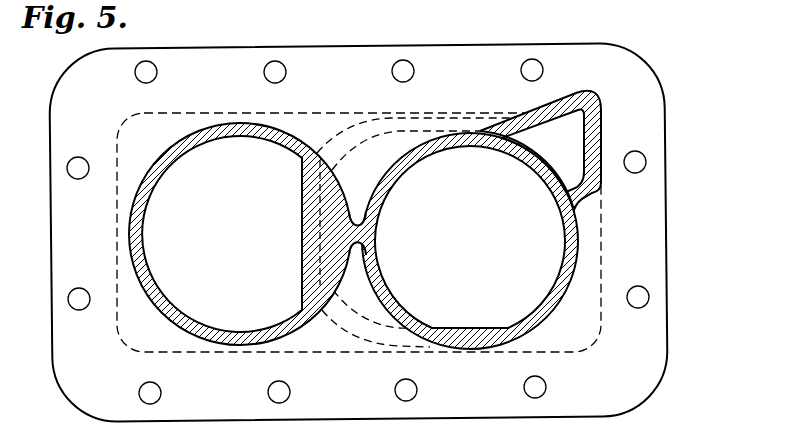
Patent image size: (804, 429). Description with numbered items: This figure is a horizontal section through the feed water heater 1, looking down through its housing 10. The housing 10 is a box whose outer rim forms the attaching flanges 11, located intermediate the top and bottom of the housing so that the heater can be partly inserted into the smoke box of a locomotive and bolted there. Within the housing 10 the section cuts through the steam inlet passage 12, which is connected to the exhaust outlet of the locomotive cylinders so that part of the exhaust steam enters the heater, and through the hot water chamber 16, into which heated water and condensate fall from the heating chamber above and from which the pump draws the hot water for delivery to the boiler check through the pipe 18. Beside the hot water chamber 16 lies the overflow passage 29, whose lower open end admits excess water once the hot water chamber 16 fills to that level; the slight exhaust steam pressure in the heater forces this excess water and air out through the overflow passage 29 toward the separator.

The feed water heater 1 is at (604, 186).
The housing 10 is at (536, 241).
The attaching flanges 11 is at (652, 113).
The steam inlet passage 12 is at (199, 0).
The hot water chamber 16 is at (548, 262).
The pipe 18 is at (593, 0).
The overflow passage 29 is at (592, 138).